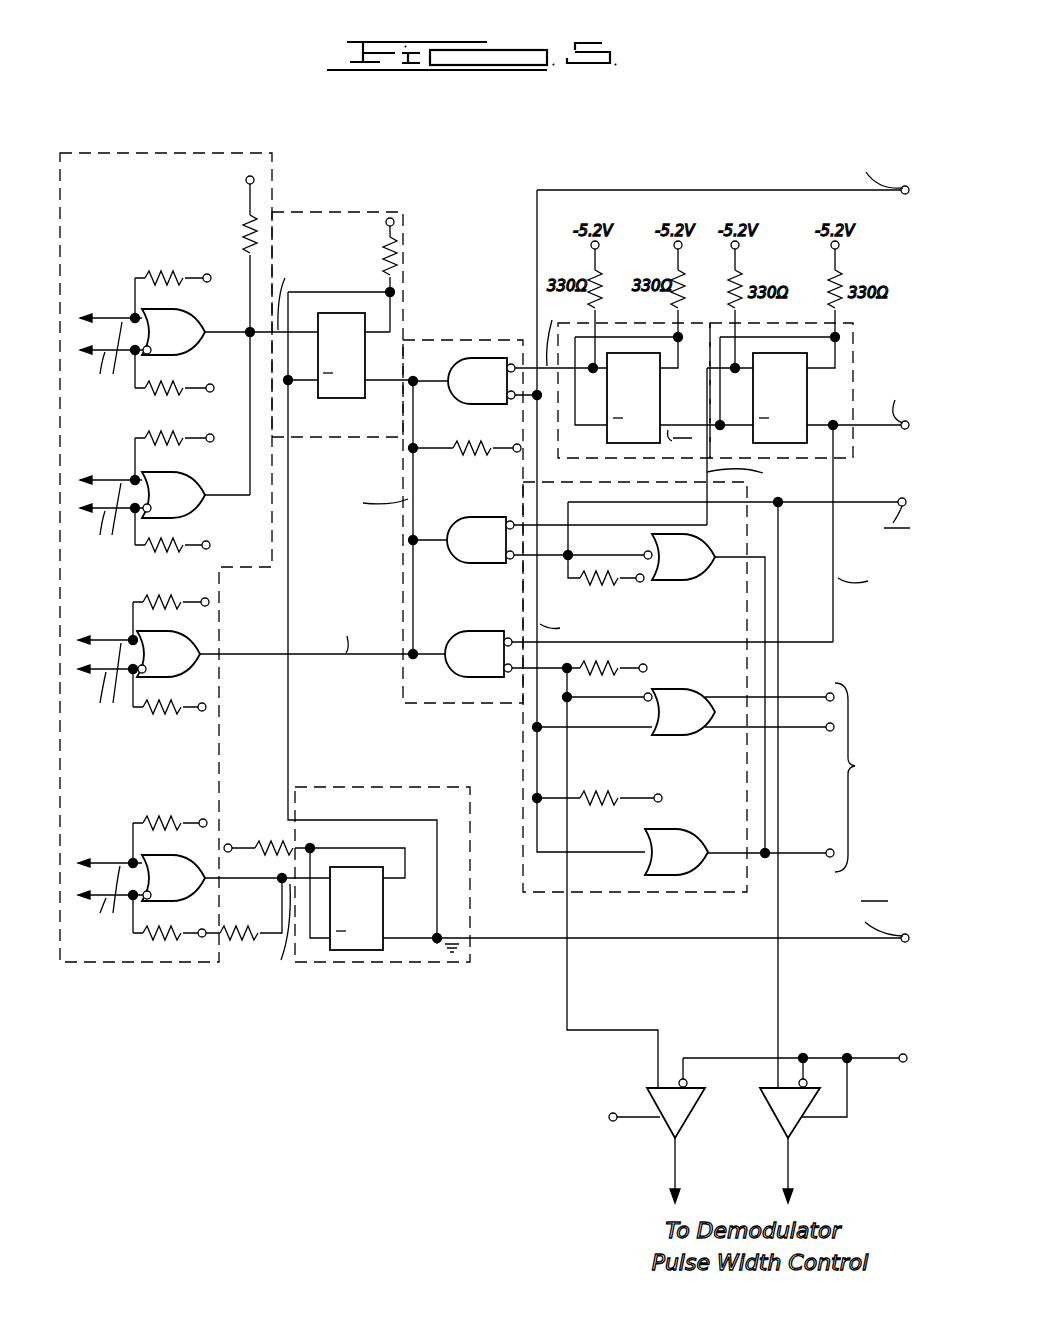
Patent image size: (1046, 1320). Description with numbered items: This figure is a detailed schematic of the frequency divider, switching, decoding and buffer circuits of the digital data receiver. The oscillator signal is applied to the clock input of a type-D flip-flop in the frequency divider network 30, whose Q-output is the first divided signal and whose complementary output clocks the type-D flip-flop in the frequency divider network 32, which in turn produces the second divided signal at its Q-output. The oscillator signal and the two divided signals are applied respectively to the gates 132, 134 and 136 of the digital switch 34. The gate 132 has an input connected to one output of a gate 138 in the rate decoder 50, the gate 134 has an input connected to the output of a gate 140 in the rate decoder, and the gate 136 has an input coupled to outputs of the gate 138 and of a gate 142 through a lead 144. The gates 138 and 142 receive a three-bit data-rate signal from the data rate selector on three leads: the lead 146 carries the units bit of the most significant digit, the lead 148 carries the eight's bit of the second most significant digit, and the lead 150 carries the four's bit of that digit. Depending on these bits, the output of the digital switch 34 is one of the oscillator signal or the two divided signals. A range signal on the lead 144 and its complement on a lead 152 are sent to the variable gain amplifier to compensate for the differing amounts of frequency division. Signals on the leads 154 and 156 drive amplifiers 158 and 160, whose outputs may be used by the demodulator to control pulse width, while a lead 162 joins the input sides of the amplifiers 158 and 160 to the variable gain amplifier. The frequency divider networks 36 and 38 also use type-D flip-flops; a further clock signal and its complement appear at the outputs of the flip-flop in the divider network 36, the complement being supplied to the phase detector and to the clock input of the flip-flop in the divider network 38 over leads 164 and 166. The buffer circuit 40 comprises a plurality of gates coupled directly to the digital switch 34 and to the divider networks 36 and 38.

The buffer circuit 40 is at (106, 199).
The frequency divider network 36 is at (372, 426).
The digital switch 34 is at (472, 609).
The frequency divider network 38 is at (412, 811).
The rate decoder 50 is at (697, 634).
The frequency divider network 32 is at (686, 398).
The frequency divider network 30 is at (836, 398).
The gate 136 is at (480, 365).
The gate 134 is at (458, 527).
The gate 132 is at (473, 680).
The gate 140 is at (710, 583).
The gate 138 is at (697, 737).
The gate 142 is at (663, 842).
The lead 144 is at (537, 247).
The lead 146 is at (801, 694).
The lead 148 is at (807, 733).
The lead 150 is at (807, 860).
The lead 152 is at (782, 506).
The lead 154 is at (776, 997).
The lead 156 is at (565, 1003).
The amplifier 158 is at (795, 1125).
The amplifier 160 is at (687, 1117).
The lead 162 is at (866, 1053).
The lead 164 is at (292, 708).
The lead 166 is at (667, 942).